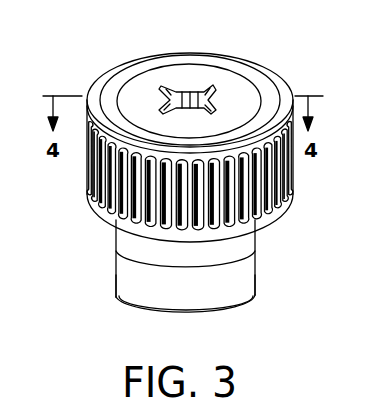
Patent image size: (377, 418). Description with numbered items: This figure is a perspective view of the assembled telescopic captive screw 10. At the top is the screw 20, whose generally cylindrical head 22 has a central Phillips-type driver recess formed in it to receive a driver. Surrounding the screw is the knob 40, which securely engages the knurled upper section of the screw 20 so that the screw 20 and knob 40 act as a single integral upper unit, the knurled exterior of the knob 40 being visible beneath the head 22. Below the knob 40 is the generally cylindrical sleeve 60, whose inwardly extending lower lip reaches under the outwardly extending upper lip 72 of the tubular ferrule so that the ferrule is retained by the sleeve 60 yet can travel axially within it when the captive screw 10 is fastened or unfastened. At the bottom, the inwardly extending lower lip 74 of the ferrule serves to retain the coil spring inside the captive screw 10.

The telescopic captive screw 10 is at (286, 226).
The screw 20 is at (227, 90).
The head 22 is at (185, 73).
The knob 40 is at (108, 215).
The sleeve 60 is at (118, 242).
The upper lip 72 is at (133, 272).
The lower lip 74 is at (229, 307).